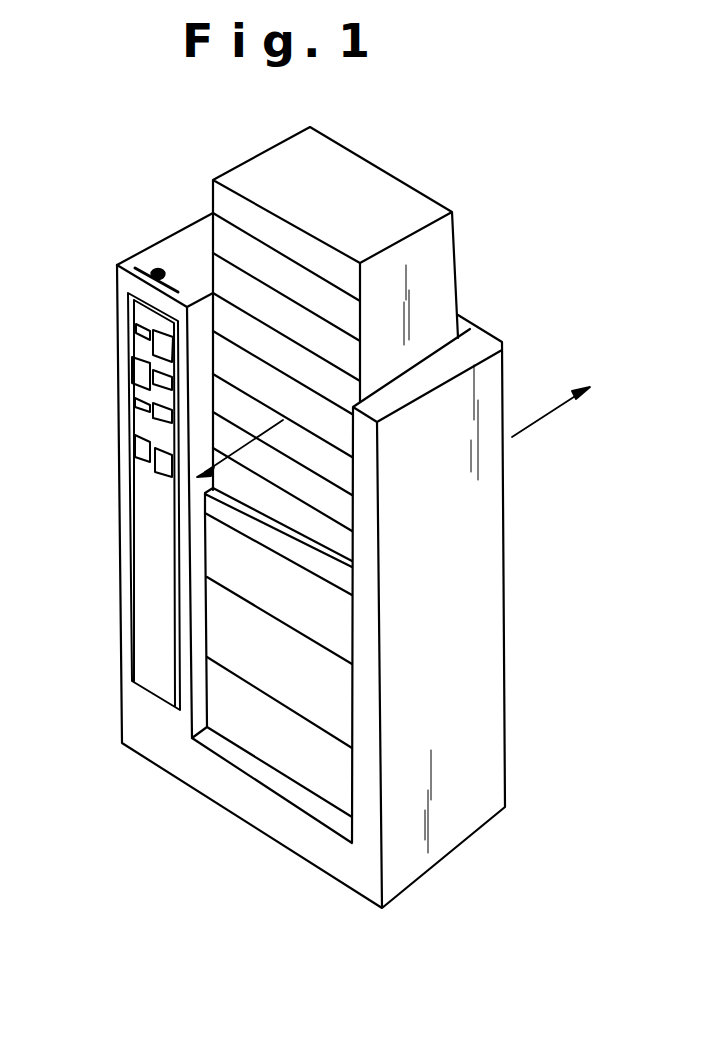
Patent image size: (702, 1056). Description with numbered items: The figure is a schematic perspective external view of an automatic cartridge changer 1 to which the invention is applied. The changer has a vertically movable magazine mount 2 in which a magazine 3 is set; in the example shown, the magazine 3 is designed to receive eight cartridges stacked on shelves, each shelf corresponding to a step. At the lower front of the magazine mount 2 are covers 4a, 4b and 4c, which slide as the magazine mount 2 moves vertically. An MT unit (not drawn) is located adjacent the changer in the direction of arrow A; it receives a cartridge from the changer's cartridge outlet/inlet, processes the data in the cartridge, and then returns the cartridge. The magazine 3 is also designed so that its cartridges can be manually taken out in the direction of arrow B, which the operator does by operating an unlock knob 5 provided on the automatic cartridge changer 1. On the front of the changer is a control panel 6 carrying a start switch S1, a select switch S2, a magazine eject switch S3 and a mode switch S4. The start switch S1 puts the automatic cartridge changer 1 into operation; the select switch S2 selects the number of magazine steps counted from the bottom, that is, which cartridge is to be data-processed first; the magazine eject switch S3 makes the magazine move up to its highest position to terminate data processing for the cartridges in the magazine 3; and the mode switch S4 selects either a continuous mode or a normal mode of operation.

The automatic cartridge changer 1 is at (475, 519).
The magazine mount 2 is at (336, 571).
The magazine 3 is at (445, 250).
The cover 4a is at (330, 622).
The cover 4b is at (342, 698).
The cover 4c is at (343, 778).
The unlock knob 5 is at (155, 270).
The control panel 6 is at (140, 487).
The start switch S1 is at (150, 330).
The select switch S2 is at (143, 370).
The magazine eject switch S3 is at (160, 416).
The mode switch S4 is at (138, 448).
The arrow A is at (553, 408).
The arrow B is at (242, 447).